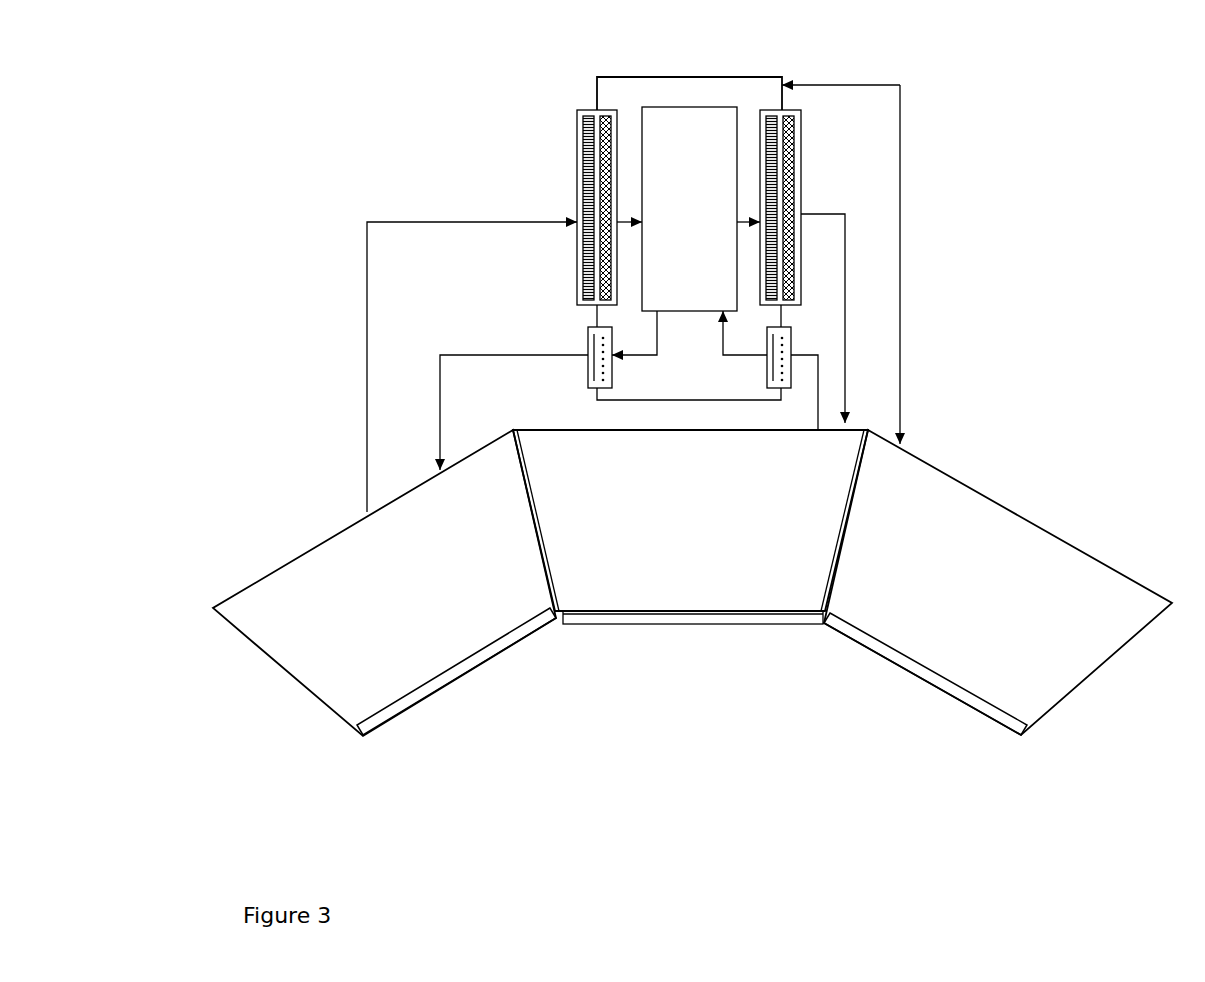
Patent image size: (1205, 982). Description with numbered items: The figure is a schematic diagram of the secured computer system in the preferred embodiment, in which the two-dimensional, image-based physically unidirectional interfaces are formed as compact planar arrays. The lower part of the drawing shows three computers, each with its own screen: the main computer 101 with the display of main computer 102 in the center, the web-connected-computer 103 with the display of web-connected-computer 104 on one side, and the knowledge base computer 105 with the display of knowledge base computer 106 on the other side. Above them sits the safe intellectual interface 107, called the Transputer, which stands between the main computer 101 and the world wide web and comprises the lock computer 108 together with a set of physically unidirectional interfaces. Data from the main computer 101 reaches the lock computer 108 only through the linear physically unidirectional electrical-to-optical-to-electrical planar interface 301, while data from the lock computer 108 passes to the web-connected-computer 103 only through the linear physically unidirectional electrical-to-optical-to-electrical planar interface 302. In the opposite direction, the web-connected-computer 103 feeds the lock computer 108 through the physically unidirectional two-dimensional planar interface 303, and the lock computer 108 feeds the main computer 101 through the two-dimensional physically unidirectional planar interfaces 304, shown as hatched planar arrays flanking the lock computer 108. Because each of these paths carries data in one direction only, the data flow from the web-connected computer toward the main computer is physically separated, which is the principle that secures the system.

The main computer 101 is at (665, 583).
The display of main computer 102 is at (758, 622).
The web-connected-computer 103 is at (480, 612).
The display of web-connected-computer 104 is at (440, 690).
The knowledge base computer 105 is at (935, 638).
The display of knowledge base computer 106 is at (1008, 727).
The safe intellectual interface 107 is at (637, 77).
The lock computer 108 is at (677, 112).
The linear physically unidirectional electrical-to-optical-to-electrical planar inte 301 is at (794, 346).
The linear physically unidirectional electrical-to-optical-to-electrical planar inte 302 is at (588, 328).
The physically unidirectional 2D planar interface 303 is at (577, 184).
The 2D physically unidirectional planar interfaces 304 is at (801, 187).